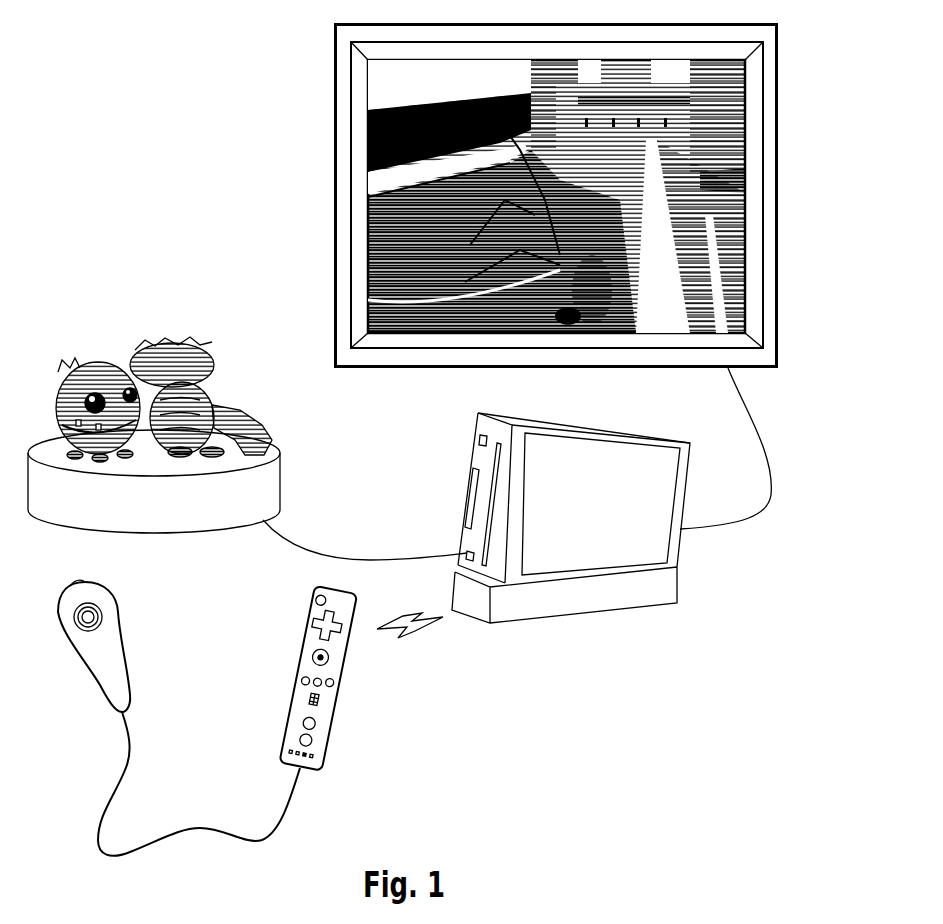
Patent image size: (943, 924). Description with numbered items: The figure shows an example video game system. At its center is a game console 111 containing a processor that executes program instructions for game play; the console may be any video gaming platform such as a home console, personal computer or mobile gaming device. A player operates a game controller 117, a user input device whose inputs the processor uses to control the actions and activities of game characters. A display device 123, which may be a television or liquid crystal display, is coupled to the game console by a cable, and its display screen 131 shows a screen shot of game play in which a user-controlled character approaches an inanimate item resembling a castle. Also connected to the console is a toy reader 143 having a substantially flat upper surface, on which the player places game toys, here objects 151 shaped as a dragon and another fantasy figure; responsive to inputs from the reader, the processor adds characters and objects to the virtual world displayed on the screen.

The game console 111 is at (663, 603).
The game controller 117 is at (340, 713).
The display device 123 is at (775, 348).
The display screen 131 is at (745, 170).
The toy reader 143 is at (272, 467).
The objects 151 is at (123, 365).